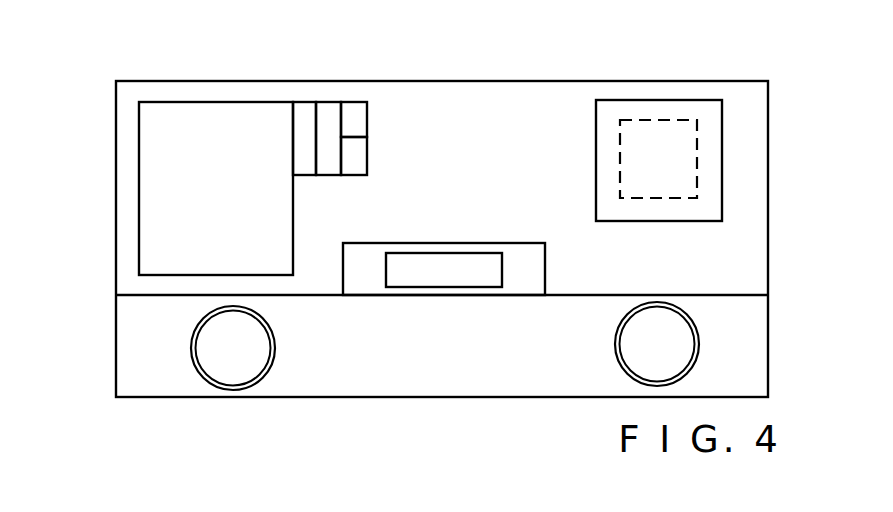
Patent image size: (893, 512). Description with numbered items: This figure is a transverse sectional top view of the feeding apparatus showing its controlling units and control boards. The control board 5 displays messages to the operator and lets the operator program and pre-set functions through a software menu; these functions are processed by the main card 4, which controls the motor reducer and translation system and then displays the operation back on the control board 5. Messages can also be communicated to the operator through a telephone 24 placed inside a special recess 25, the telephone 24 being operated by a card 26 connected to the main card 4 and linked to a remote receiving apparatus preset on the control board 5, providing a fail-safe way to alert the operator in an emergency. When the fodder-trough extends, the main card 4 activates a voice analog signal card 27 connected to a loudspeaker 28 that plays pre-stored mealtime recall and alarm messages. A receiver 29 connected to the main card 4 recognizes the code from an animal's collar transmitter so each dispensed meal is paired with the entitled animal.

The card 4 is at (148, 162).
The control board 5 is at (446, 263).
The telephone 24 is at (697, 142).
The special recess 25 is at (714, 167).
The card 26 is at (304, 102).
The voice analog signal card 27 is at (328, 102).
The loudspeaker 28 is at (367, 142).
The receiver 29 is at (348, 102).